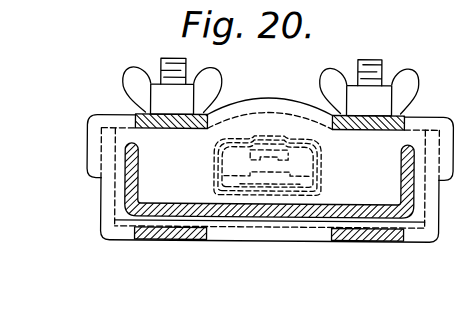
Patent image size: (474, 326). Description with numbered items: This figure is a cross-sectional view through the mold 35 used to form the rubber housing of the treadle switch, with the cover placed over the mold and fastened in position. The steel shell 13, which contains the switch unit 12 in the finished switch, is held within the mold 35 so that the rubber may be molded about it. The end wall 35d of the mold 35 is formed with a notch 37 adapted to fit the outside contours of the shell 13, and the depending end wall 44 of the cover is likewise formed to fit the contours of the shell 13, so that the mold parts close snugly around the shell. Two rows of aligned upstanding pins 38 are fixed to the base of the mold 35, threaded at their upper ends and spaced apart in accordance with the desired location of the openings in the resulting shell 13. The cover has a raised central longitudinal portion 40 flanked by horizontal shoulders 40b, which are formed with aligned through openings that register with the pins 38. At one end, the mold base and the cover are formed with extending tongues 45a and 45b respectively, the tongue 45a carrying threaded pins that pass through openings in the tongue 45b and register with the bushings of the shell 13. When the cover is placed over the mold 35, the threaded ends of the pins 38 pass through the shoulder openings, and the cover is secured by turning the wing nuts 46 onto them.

The switch unit 12 is at (213, 230).
The steel shell 13 is at (406, 229).
The mold 35 is at (228, 197).
The end wall 35d is at (281, 228).
The notch 37 is at (113, 220).
The upstanding pins 38 is at (170, 58).
The raised central longitudinal portion 40 is at (292, 101).
The horizontal shoulder 40b is at (445, 80).
The depending end wall 44 is at (428, 118).
The tongue 45a is at (153, 233).
The tongue 45b is at (210, 114).
The wing nuts 46 is at (137, 66).